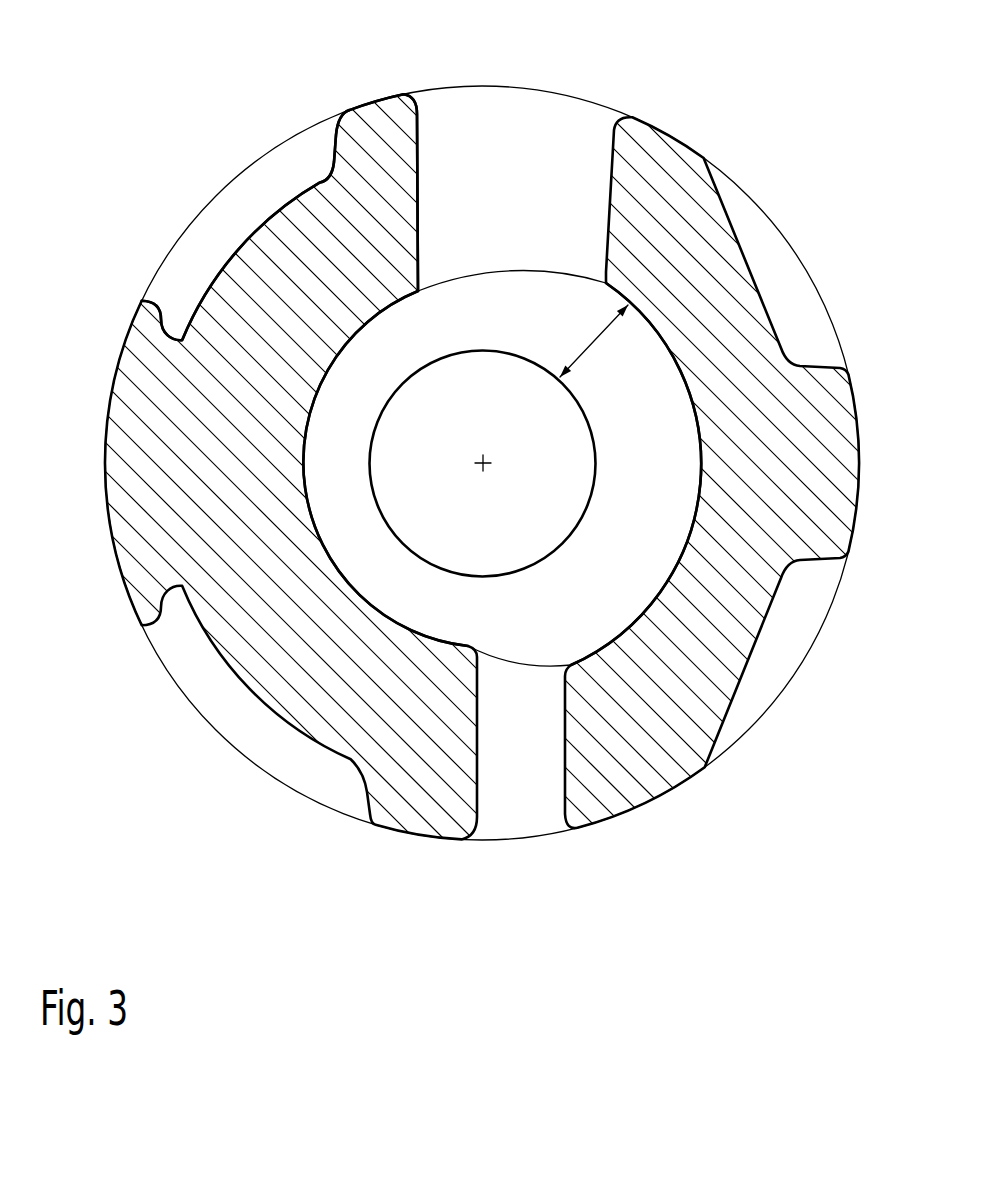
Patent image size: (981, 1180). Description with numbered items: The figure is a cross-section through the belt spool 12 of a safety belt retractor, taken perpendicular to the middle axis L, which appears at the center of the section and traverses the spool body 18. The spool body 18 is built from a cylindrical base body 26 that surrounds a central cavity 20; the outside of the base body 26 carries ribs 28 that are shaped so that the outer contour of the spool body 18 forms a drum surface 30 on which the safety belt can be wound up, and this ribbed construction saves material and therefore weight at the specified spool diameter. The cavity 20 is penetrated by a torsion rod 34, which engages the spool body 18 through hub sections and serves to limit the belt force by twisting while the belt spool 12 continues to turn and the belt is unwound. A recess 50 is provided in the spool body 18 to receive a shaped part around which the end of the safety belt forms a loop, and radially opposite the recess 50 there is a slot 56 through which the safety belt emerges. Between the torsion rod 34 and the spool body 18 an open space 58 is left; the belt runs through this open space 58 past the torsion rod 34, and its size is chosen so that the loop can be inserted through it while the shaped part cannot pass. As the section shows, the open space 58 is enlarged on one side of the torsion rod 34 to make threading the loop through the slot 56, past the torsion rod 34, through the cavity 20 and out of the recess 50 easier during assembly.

The belt spool 12 is at (440, 906).
The spool body 18 is at (373, 203).
The cavity 20 is at (617, 590).
The cylindrical base body 26 is at (247, 627).
The ribs 28 is at (355, 123).
The drum surface 30 is at (197, 216).
The torsion rod 34 is at (430, 509).
The recess 50 is at (568, 130).
The slot 56 is at (516, 813).
The open space 58 is at (597, 343).
The middle axis L is at (486, 466).